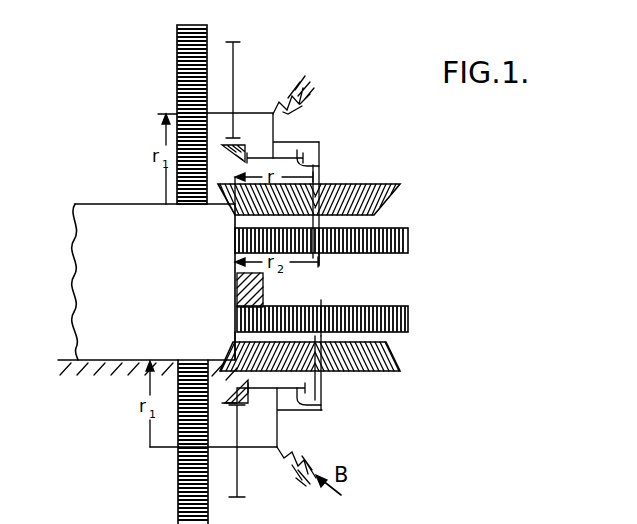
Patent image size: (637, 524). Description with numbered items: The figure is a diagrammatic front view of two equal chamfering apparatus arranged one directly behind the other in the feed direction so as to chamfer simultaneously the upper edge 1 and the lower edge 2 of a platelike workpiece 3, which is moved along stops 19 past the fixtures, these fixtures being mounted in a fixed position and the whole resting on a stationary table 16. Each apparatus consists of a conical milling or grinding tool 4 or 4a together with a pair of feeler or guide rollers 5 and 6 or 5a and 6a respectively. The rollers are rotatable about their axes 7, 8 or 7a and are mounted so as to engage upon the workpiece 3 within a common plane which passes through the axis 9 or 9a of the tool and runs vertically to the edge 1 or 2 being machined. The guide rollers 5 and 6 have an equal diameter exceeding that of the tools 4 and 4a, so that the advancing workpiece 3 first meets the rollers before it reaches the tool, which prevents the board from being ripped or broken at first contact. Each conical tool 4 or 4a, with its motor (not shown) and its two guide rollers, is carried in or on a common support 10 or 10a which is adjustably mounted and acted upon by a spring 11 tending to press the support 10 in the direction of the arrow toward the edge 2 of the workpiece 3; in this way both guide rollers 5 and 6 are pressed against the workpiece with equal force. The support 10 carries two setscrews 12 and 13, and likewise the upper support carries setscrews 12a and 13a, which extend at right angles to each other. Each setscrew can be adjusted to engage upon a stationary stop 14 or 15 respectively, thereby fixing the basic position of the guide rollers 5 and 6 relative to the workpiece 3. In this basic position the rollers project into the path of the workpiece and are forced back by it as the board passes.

The upper edge 1 is at (233, 206).
The lower edge 2 is at (233, 357).
The platelike workpiece 3 is at (91, 205).
The conical milling or grinding tool 4 is at (390, 362).
The conical milling or grinding tool 4a is at (390, 200).
The guide roller 5 is at (409, 318).
The guide roller 5a is at (409, 241).
The guide roller 6 is at (196, 505).
The guide roller 6a is at (182, 55).
The roller axis 7 is at (321, 300).
The roller axis 7a is at (319, 258).
The roller axis 8 is at (162, 450).
The tool axis 9 is at (324, 384).
The tool axis 9a is at (320, 166).
The support 10 is at (276, 446).
The support 10a is at (263, 135).
The spring 11 is at (292, 112).
The setscrew 12 is at (242, 484).
The setscrew 12a is at (235, 66).
The setscrew 13 is at (325, 408).
The setscrew 13a is at (305, 145).
The stationary stop 14 is at (229, 408).
The stationary stop 15 is at (276, 386).
The stationary table 16 is at (101, 366).
The stops 19 is at (238, 292).